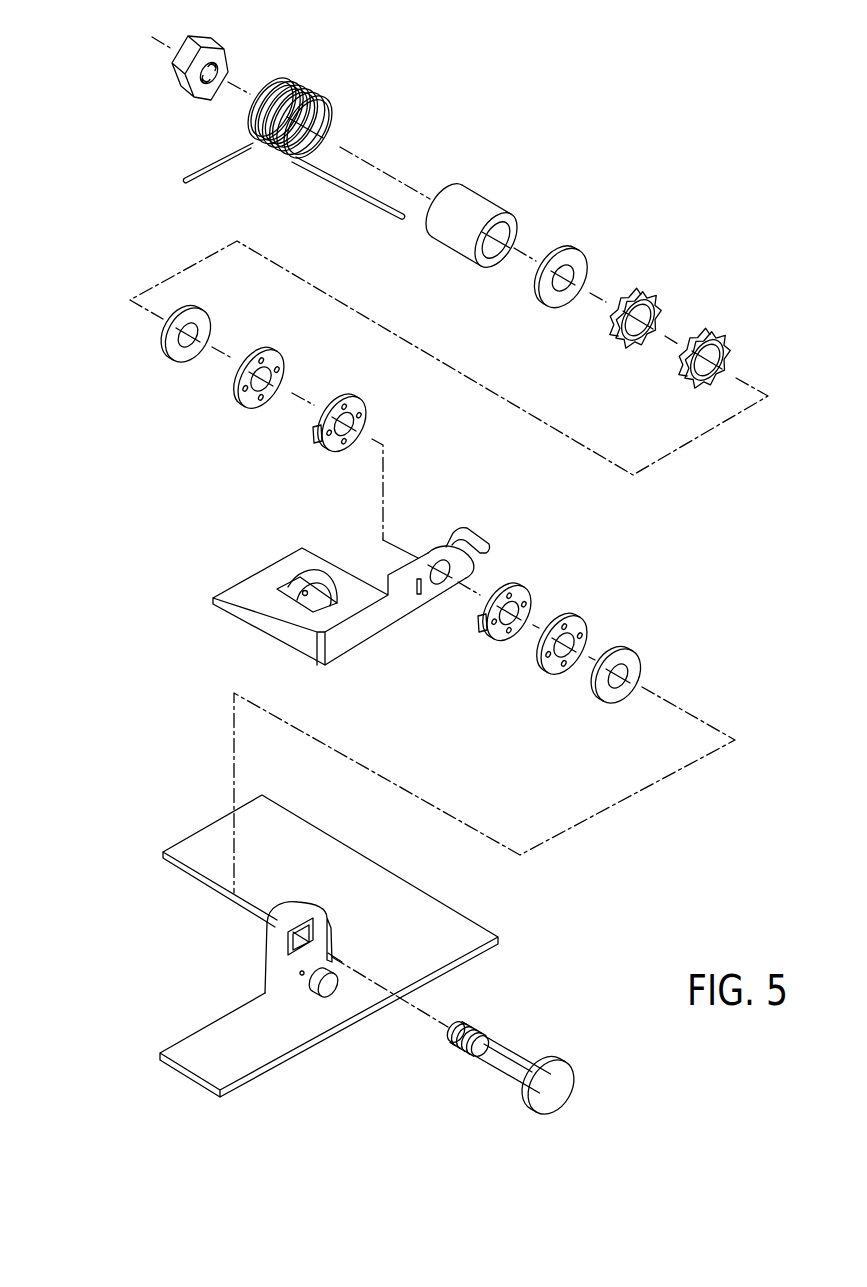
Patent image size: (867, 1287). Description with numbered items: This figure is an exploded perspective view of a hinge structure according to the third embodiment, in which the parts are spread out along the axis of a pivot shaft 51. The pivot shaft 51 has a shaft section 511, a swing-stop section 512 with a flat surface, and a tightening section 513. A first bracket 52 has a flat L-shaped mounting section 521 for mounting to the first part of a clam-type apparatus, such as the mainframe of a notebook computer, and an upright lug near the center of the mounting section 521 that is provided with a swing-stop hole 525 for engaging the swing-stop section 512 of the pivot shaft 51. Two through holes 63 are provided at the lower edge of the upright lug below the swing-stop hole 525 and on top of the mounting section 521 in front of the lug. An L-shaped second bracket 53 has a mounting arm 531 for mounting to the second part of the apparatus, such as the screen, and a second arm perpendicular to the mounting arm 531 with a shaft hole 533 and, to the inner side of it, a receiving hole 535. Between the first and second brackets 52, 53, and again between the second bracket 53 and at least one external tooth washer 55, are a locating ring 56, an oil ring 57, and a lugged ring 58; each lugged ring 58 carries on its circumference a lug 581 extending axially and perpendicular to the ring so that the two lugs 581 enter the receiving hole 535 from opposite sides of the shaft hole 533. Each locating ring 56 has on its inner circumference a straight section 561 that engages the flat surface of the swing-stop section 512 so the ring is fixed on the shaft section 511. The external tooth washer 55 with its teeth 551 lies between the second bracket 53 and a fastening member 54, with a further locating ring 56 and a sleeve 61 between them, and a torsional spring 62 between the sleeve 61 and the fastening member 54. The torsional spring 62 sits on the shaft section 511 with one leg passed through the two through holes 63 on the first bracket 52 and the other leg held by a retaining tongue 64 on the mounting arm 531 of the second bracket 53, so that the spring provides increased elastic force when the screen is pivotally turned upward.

The pivot shaft 51 is at (513, 1040).
The shaft section 511 is at (510, 1073).
The swing-stop section 512 is at (530, 1062).
The tightening section 513 is at (457, 1050).
The first bracket 52 is at (285, 946).
The L-shaped mounting section 521 is at (390, 895).
The swing-stop hole 525 is at (290, 942).
The second bracket 53 is at (311, 578).
The mounting arm 531 is at (256, 611).
The shaft hole 533 is at (447, 565).
The receiving hole 535 is at (422, 596).
The fastening member 54 is at (175, 86).
The external tooth washer 55 is at (676, 354).
The ratchet teeth 551 is at (723, 338).
The locating ring 56 is at (562, 302).
The straight section 561 is at (578, 276).
The oil ring 57 is at (279, 359).
The lugged ring 58 is at (360, 403).
The lug 581 is at (319, 440).
The sleeve 61 is at (478, 208).
The torsional spring 62 is at (304, 92).
The through holes 63 is at (304, 978).
The retaining tongue 64 is at (313, 574).